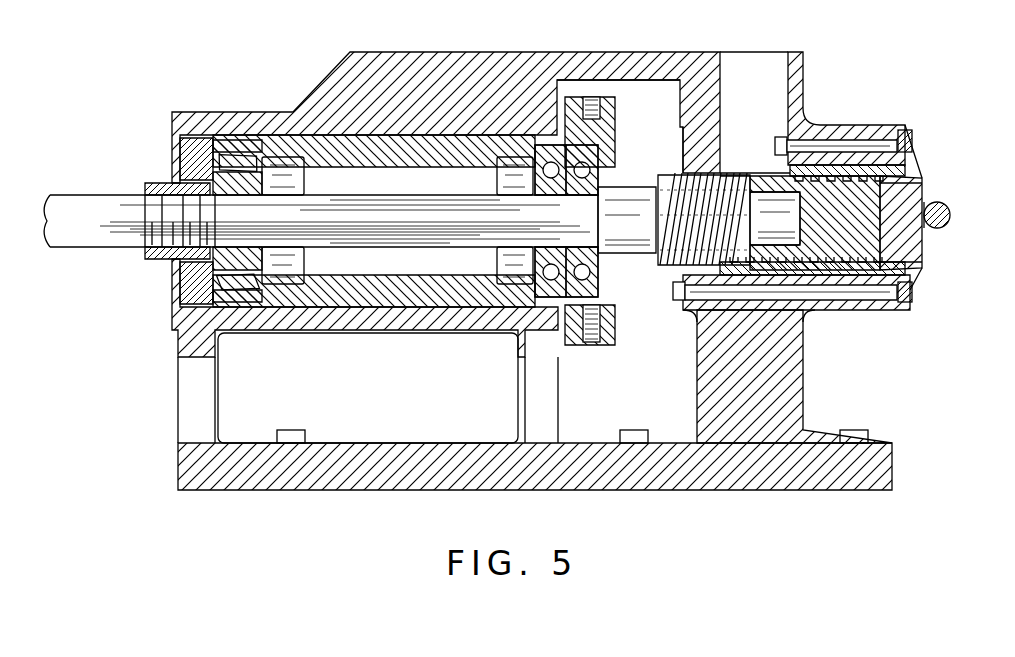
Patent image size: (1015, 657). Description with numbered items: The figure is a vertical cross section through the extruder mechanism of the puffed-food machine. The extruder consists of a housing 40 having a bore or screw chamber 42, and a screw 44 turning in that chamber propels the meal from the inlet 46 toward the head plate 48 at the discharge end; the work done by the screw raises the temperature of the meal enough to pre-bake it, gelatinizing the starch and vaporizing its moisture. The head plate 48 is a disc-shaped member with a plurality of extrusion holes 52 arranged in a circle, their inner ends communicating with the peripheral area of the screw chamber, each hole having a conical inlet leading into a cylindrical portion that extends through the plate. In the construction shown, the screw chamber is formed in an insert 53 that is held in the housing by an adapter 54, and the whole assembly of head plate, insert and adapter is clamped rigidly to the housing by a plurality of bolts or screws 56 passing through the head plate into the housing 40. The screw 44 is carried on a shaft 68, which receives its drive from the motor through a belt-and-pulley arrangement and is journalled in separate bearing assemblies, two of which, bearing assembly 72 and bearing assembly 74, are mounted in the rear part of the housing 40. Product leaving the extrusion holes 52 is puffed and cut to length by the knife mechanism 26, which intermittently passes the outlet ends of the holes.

The knife mechanism 26 is at (988, 225).
The housing 40 is at (757, 455).
The bore or screw chamber 42 is at (812, 152).
The screw 44 is at (822, 250).
The inlet 46 is at (768, 62).
The head plate 48 is at (925, 195).
The extrusion holes 52 is at (922, 186).
The insert 53 is at (855, 165).
The adapter 54 is at (872, 305).
The bolts or screws 56 is at (908, 135).
The shaft 68 is at (112, 238).
The bearing assembly 72 is at (190, 158).
The bearing assembly 74 is at (600, 147).